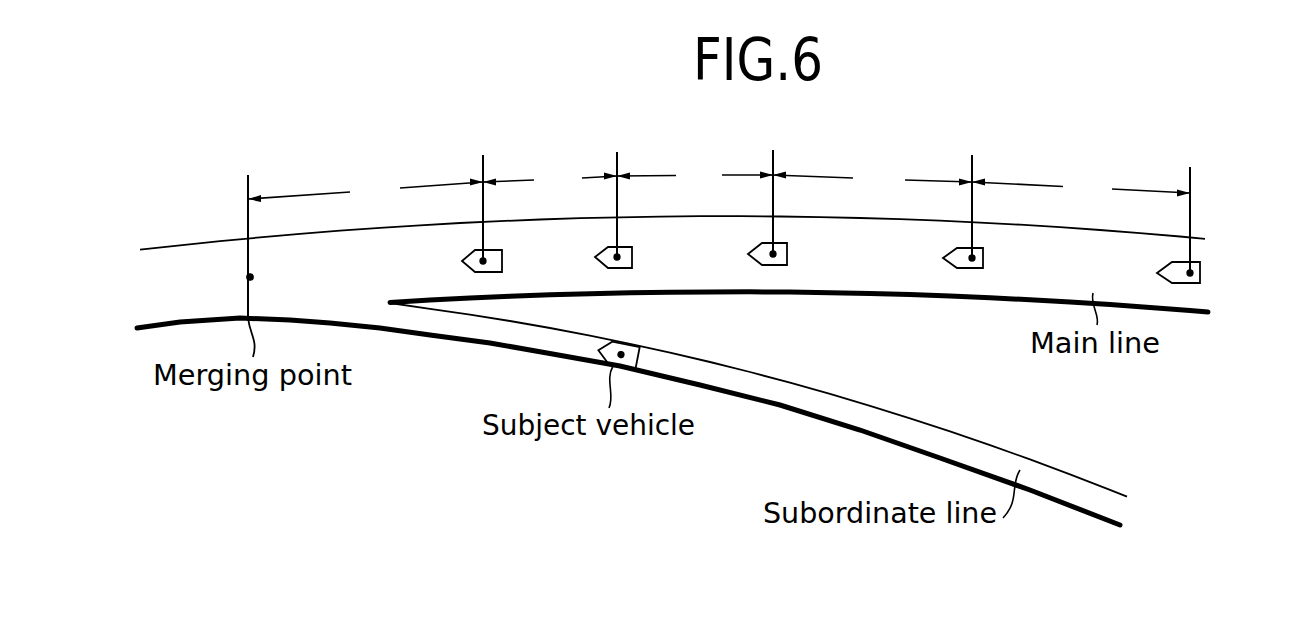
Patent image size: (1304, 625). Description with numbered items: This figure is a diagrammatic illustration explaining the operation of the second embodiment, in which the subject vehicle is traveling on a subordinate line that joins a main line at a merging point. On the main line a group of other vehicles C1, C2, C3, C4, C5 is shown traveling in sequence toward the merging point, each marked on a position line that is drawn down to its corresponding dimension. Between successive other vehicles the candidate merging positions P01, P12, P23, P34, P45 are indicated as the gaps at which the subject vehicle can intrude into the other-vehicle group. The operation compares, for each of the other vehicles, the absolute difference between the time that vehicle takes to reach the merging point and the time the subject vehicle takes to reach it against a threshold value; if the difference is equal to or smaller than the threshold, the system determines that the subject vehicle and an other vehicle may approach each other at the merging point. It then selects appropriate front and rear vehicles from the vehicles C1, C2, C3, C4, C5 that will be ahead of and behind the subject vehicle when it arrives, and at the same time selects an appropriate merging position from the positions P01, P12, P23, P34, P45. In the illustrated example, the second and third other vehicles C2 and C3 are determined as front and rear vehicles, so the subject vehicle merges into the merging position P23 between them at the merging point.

The first other vehicle C1 is at (492, 272).
The second other vehicle C2 is at (622, 268).
The third other vehicle C3 is at (778, 265).
The fourth other vehicle C4 is at (972, 268).
The fifth other vehicle C5 is at (1190, 283).
The merging position P01 is at (365, 187).
The merging position P12 is at (550, 180).
The merging position P23 is at (695, 177).
The merging position P34 is at (872, 180).
The merging position P45 is at (1081, 193).